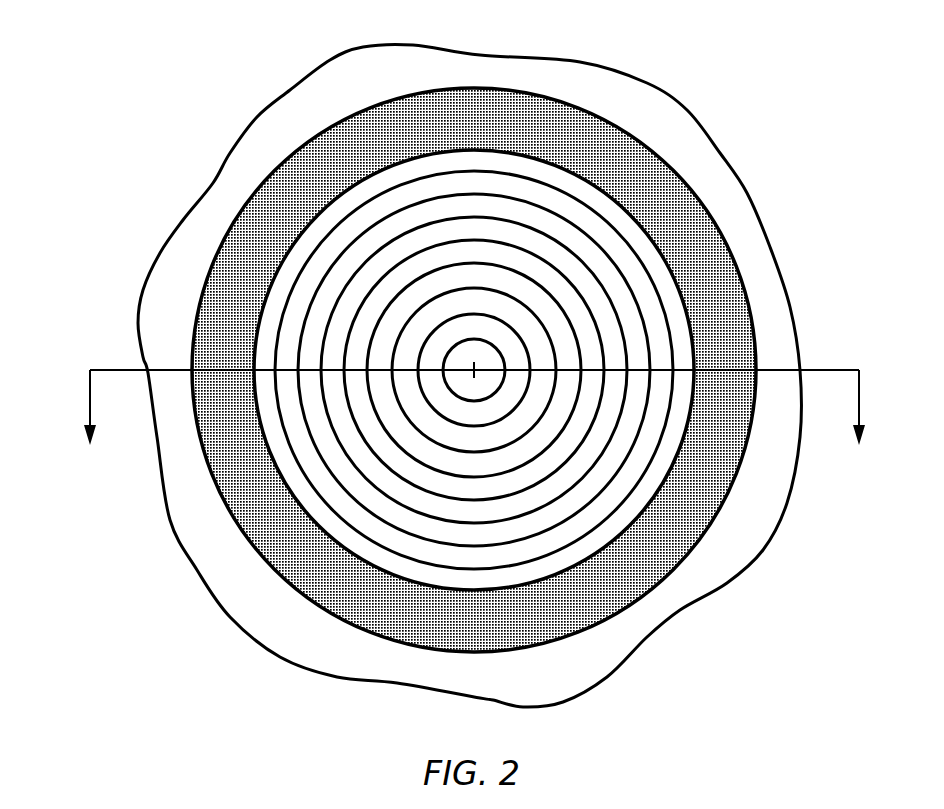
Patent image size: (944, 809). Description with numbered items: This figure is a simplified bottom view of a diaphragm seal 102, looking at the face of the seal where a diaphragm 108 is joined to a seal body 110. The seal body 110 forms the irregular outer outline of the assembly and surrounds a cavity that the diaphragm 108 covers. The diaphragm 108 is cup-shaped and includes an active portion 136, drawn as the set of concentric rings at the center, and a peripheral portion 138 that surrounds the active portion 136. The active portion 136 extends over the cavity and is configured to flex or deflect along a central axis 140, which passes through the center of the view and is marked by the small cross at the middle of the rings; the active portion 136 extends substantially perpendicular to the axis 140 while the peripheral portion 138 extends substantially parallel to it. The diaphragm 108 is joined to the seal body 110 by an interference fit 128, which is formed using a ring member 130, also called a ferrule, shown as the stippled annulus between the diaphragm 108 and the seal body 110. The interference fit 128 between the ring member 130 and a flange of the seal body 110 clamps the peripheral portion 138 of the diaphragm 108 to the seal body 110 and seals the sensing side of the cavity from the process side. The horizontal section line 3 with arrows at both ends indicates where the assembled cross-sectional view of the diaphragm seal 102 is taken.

The diaphragm seal 102 is at (98, 38).
The diaphragm 108 is at (340, 237).
The seal body 110 is at (177, 248).
The interference fit 128 is at (629, 194).
The ring member 130 is at (273, 550).
The active portion 136 is at (597, 510).
The peripheral portion 138 is at (731, 228).
The central axis 140 is at (482, 370).
The line 3- 3 is at (474, 411).